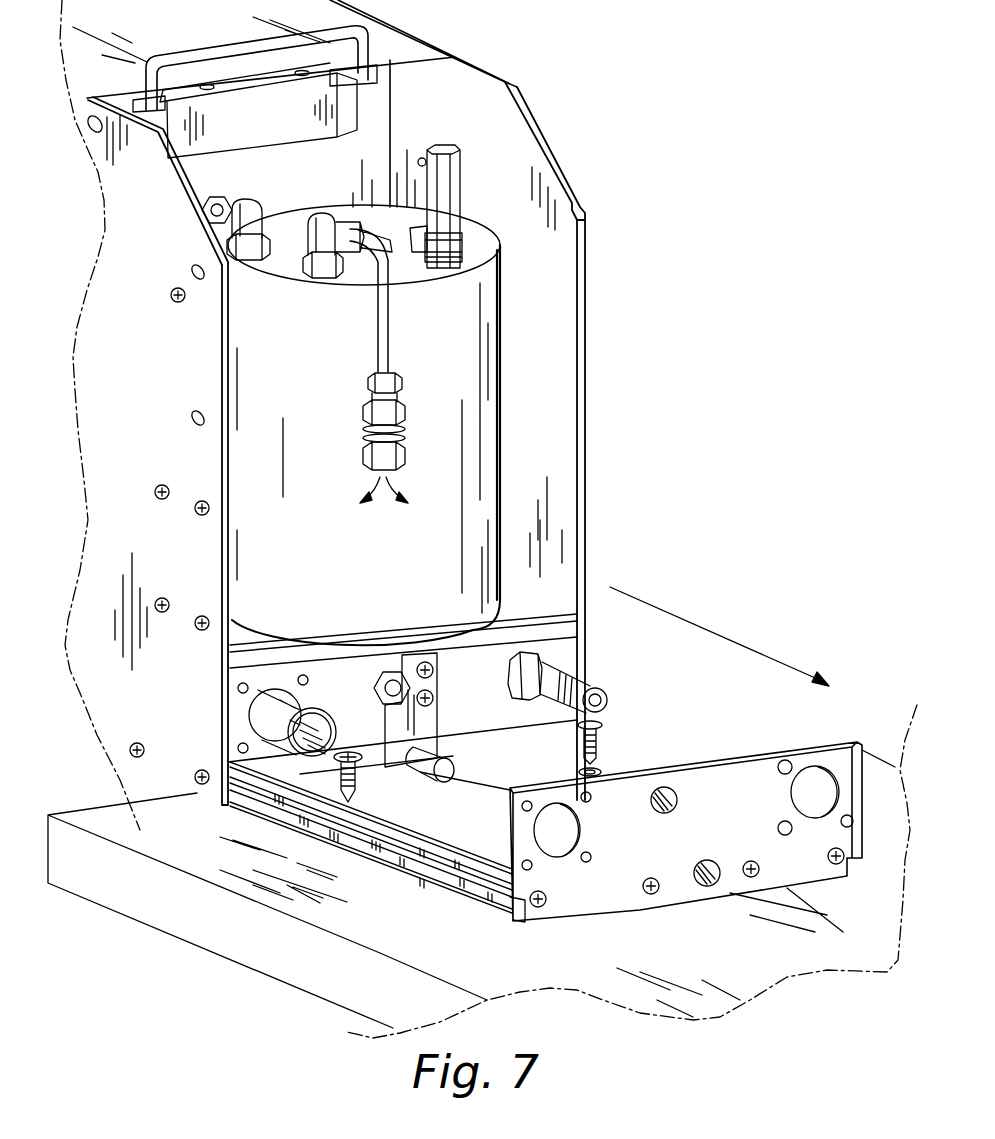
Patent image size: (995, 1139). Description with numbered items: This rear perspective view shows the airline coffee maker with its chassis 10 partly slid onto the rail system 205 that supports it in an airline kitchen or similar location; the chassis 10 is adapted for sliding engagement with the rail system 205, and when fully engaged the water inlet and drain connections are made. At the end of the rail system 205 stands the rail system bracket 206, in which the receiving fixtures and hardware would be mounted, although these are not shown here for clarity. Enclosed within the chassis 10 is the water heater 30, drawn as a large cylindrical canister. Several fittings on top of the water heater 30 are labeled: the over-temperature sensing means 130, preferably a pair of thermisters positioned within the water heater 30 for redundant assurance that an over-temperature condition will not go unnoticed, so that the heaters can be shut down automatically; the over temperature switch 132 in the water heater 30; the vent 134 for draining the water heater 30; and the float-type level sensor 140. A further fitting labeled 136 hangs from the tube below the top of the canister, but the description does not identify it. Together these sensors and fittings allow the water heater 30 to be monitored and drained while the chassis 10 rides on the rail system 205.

The chassis 10 is at (188, 772).
The water heater 30 is at (485, 520).
The over-temperature sensing means 130 is at (420, 265).
The over temperature switch 132 is at (345, 207).
The vent 134 is at (458, 186).
The union fitting 136 is at (393, 417).
The level sensor 140 is at (380, 235).
The rail system 205 is at (448, 894).
The rail system bracket 206 is at (617, 885).